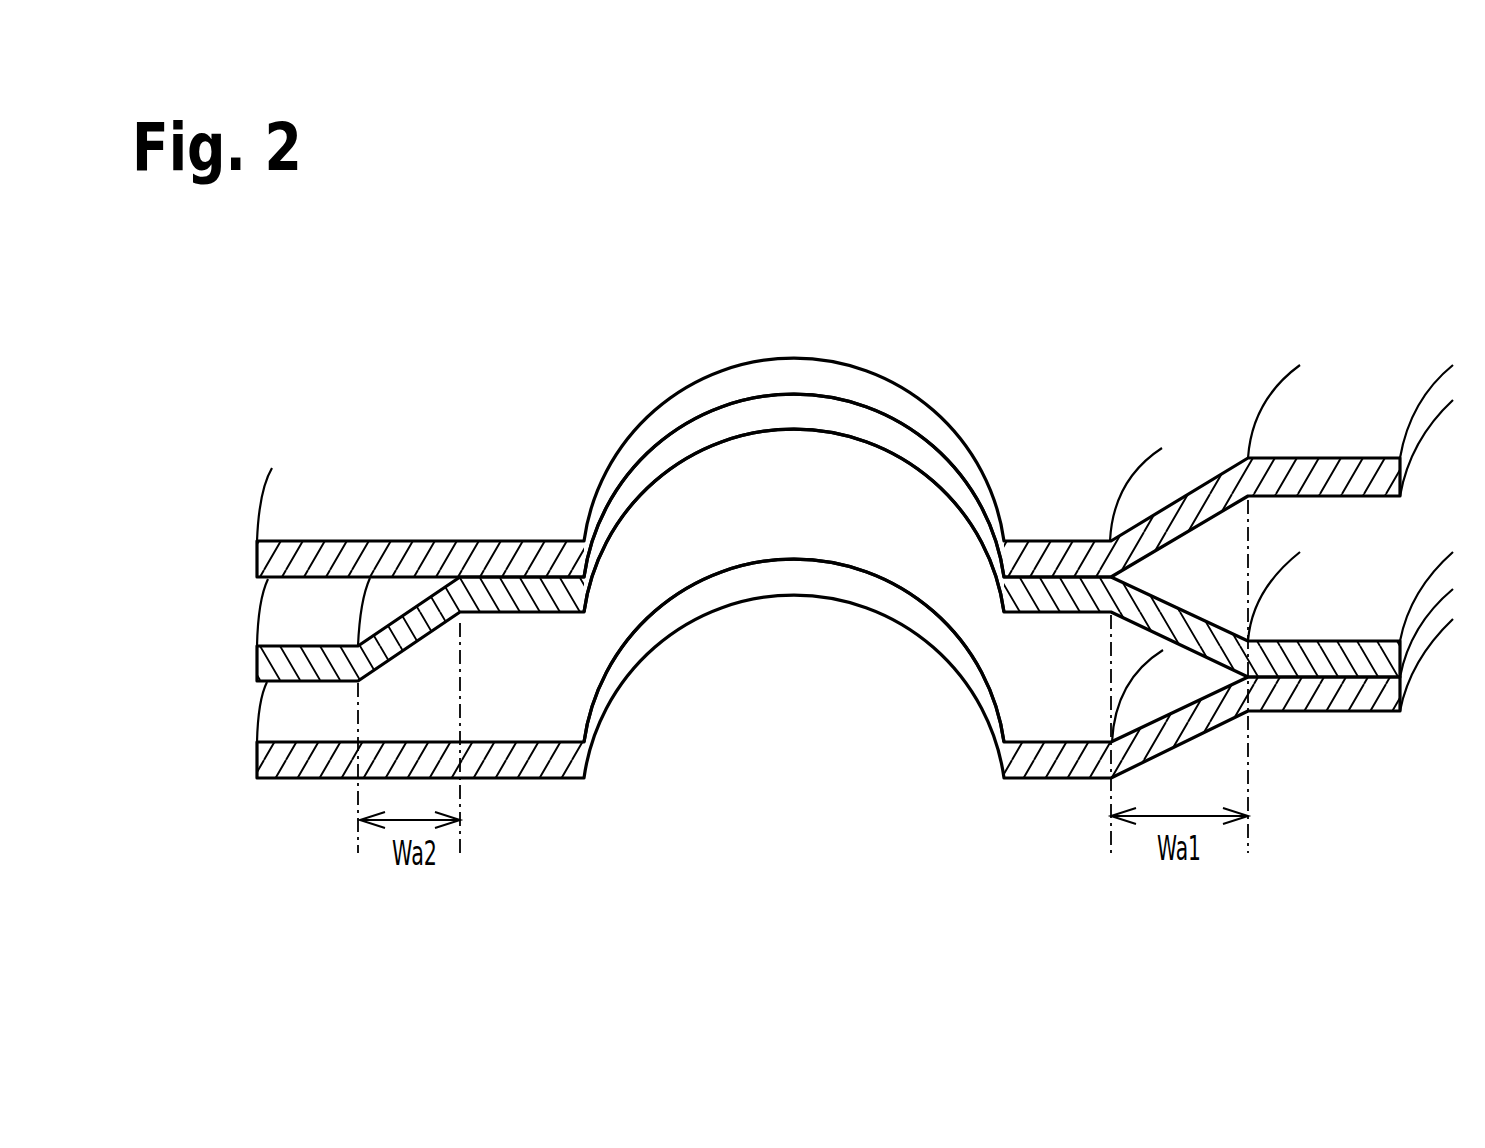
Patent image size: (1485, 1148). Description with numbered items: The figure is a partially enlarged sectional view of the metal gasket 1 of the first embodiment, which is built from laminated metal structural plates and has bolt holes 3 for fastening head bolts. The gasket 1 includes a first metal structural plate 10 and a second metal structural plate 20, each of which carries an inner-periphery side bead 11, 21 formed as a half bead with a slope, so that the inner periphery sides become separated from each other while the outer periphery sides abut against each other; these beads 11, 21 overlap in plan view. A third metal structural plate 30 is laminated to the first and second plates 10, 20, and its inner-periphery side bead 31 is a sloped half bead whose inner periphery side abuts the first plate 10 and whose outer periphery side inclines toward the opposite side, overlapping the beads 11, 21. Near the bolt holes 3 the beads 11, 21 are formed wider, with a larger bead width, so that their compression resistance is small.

The metal gasket 1 is at (397, 540).
The bolt hole 3 is at (845, 706).
The first metal structural plate 10 is at (272, 561).
The inner-periphery side bead 11 is at (1215, 497).
The second metal structural plate 20 is at (270, 646).
The inner-periphery side bead 21 is at (1130, 625).
The third metal structural plate 30 is at (278, 771).
The inner-periphery side bead 31 is at (1210, 728).